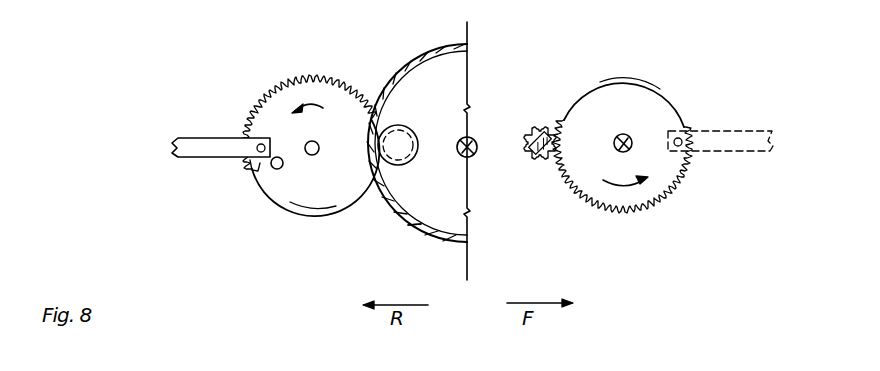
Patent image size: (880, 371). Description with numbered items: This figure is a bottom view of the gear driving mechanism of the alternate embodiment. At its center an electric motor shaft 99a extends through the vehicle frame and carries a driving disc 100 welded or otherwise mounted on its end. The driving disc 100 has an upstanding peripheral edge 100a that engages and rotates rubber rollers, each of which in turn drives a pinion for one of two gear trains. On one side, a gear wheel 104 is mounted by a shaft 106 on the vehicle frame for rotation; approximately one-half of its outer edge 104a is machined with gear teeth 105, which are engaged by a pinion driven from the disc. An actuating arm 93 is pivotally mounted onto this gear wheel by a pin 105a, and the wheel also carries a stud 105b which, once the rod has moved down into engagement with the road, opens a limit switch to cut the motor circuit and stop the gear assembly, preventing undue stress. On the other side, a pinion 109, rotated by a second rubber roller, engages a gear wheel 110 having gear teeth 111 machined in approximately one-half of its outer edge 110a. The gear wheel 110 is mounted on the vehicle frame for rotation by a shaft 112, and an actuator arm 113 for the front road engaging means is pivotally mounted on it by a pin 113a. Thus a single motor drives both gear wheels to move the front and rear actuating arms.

The actuating arm 93 is at (196, 138).
The electric motor shaft 99a is at (458, 140).
The driving disc 100 is at (420, 62).
The upstanding peripheral edge 100a is at (418, 232).
The gear wheel 104 is at (330, 182).
The outer edge 104a is at (313, 212).
The gear teeth 105 is at (262, 97).
The pin 105a is at (255, 168).
The stud 105b is at (268, 195).
The shaft 106 is at (319, 148).
The pinion 109 is at (535, 125).
The gear wheel 110 is at (645, 122).
The outer edge 110a is at (648, 78).
The gear teeth 111 is at (660, 200).
The shaft 112 is at (614, 143).
The actuator arm 113 is at (713, 130).
The pin 113a is at (678, 136).